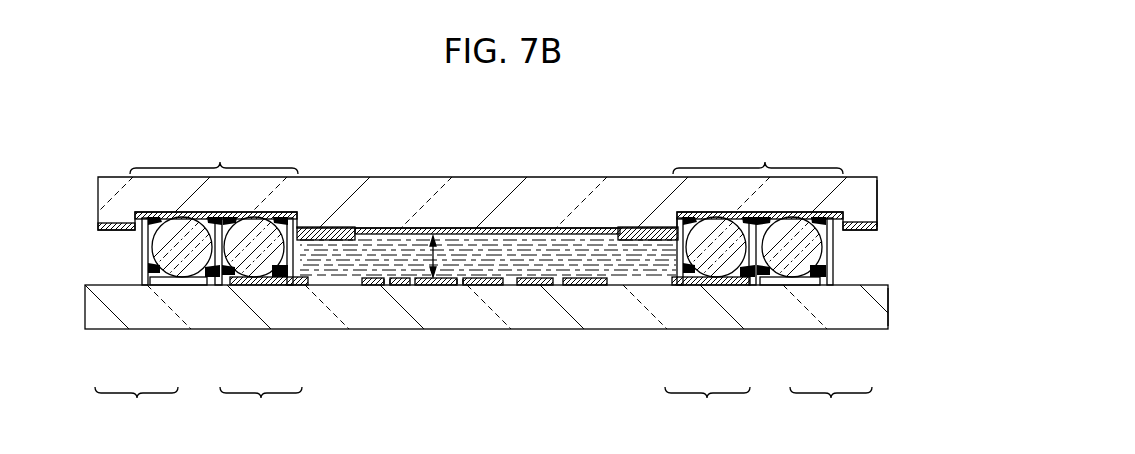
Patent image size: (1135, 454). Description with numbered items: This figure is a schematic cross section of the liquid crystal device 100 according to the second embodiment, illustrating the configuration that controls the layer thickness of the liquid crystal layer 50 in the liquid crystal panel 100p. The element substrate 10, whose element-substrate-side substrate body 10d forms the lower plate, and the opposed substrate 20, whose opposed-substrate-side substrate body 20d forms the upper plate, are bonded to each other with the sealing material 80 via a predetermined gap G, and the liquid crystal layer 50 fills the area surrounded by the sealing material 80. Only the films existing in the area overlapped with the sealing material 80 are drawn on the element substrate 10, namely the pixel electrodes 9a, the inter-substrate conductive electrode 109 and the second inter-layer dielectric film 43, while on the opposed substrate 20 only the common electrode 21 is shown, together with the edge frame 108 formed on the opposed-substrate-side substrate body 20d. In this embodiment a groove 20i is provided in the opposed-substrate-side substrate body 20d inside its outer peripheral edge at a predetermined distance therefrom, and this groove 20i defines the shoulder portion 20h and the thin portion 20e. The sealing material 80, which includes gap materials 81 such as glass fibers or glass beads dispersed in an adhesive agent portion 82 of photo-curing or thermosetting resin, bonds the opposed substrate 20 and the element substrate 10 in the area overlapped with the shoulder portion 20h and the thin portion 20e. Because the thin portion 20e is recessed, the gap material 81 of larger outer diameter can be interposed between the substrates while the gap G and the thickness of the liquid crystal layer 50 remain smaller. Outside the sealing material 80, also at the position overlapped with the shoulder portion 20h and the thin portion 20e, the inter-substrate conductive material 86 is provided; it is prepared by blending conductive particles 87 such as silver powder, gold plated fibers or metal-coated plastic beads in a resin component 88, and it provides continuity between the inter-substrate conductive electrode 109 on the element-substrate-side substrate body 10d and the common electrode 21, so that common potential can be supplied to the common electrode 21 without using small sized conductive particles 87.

The liquid crystal device 100 is at (690, 128).
The liquid crystal panel 100p is at (696, 125).
The element substrate 10 is at (433, 329).
The element-substrate-side substrate body 10d is at (871, 305).
The opposed substrate 20 is at (420, 177).
The opposed-substrate-side substrate body 20d is at (871, 201).
The thin portion 20e is at (486, 156).
The shoulder portion 20h is at (870, 163).
The groove 20i is at (132, 224).
The common electrode 21 is at (510, 228).
The edge frame 108 is at (322, 228).
The gap G is at (437, 250).
The liquid crystal layer 50 is at (560, 285).
The pixel electrodes 9a is at (530, 285).
The second inter-layer dielectric film 43 is at (296, 285).
The sealing material 80 is at (485, 405).
The gap materials 81 is at (253, 262).
The adhesive agent portion 82 is at (282, 280).
The inter-substrate conductive material 86 is at (483, 405).
The conductive particles 87 is at (165, 262).
The resin component 88 is at (200, 278).
The inter-substrate conductive electrode 109 is at (197, 286).